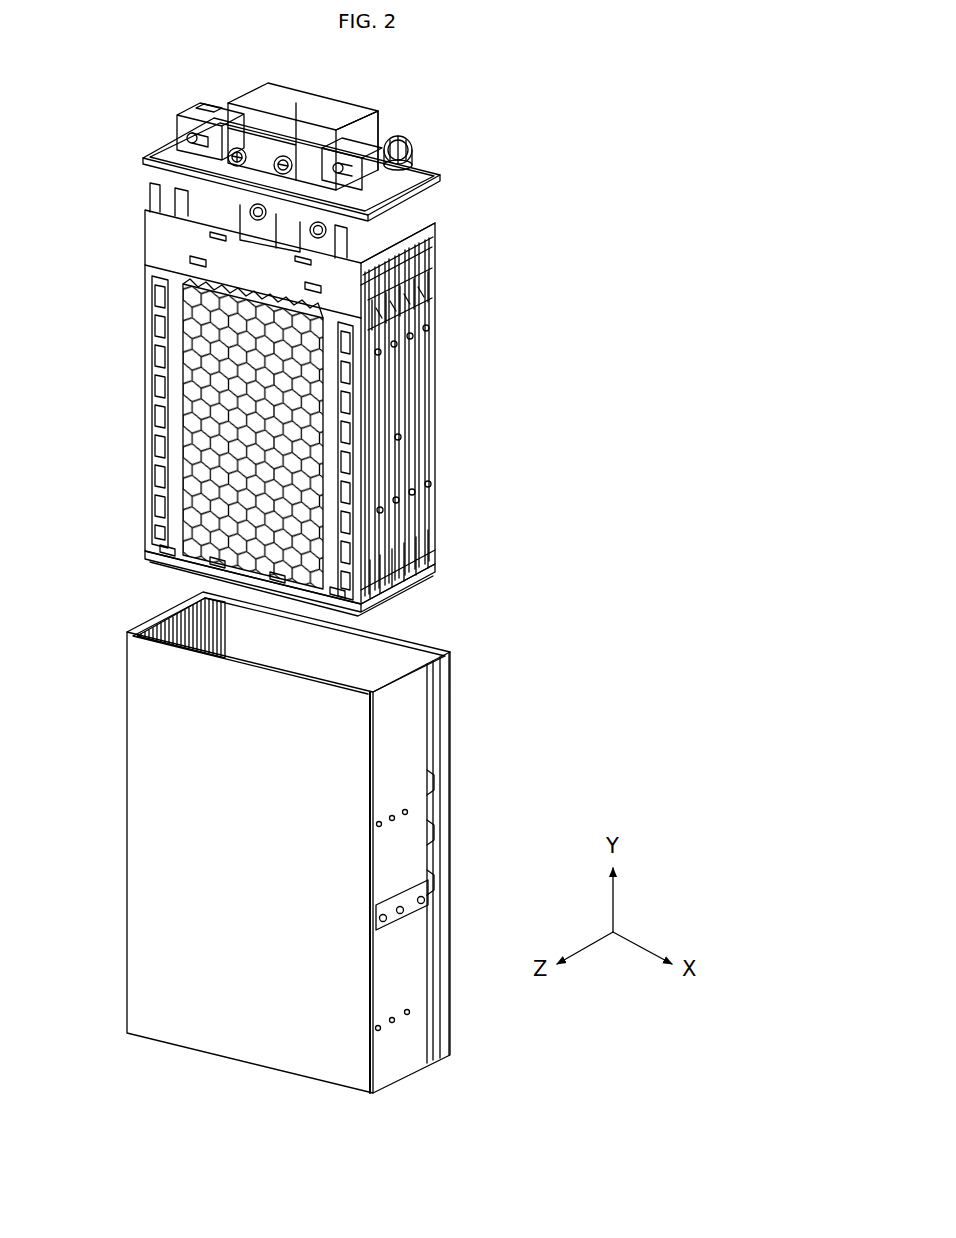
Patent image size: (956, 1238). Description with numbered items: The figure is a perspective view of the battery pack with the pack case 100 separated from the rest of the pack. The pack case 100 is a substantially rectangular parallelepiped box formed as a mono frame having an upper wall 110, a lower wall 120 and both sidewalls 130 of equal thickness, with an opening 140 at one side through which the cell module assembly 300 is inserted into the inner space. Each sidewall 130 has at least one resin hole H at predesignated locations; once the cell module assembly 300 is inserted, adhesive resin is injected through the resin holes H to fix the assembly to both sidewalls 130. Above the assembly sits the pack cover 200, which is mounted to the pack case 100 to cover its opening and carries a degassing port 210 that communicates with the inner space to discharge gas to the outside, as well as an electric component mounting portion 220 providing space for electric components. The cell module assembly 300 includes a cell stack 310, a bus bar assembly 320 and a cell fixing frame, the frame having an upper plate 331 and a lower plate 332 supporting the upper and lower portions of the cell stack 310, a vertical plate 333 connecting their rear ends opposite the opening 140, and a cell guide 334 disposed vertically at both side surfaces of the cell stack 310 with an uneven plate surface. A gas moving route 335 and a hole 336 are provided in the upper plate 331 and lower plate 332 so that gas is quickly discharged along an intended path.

The pack case 100 is at (285, 833).
The upper wall 110 is at (152, 795).
The lower wall 120 is at (428, 655).
The sidewalls 130 is at (160, 640).
The opening 140 is at (255, 645).
The pack cover 200 is at (291, 142).
The degassing port 210 is at (398, 143).
The electric component mounting portion 220 is at (320, 110).
The cell module assembly 300 is at (293, 603).
The cell stack 310 is at (410, 290).
The bus bar assembly 320 is at (166, 240).
The upper plate 331 is at (362, 372).
The lower plate 332 is at (440, 292).
The vertical plate 333 is at (430, 577).
The cell guide 334 is at (408, 402).
The gas moving route 335 is at (175, 430).
The hole 336 is at (168, 540).
The resin hole H is at (420, 437).